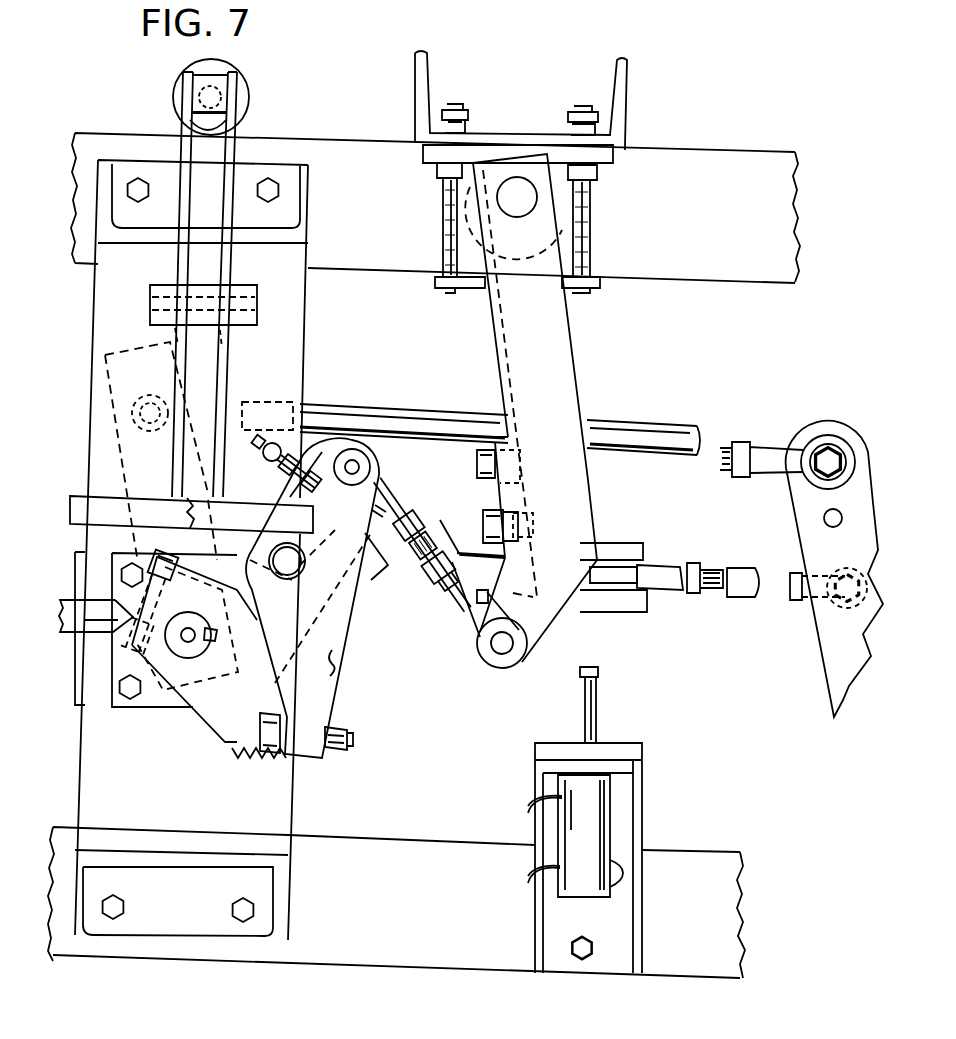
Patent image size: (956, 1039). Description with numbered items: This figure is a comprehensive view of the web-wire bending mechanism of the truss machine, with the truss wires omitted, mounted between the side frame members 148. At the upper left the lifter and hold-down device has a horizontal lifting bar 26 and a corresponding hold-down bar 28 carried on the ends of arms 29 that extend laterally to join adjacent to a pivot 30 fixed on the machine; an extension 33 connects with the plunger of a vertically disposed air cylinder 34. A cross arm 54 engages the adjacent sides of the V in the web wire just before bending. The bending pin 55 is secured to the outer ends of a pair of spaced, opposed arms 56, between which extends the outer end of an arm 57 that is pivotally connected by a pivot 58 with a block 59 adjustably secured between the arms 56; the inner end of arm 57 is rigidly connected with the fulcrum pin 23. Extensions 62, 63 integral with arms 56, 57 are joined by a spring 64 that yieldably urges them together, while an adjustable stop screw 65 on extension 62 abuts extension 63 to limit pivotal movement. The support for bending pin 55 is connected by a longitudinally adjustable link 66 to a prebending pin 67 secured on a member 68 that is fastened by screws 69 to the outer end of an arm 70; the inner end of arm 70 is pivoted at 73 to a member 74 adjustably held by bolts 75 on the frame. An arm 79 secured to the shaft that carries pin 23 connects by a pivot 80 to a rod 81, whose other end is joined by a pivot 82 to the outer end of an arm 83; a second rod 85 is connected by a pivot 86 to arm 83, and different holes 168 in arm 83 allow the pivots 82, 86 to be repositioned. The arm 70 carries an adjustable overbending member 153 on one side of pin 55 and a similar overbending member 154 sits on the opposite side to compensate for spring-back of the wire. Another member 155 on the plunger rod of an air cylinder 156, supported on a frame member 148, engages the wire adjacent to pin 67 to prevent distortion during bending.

The fulcrum pin 23 is at (194, 640).
The lifting bar 26 is at (148, 512).
The hold-down bar 28 is at (258, 510).
The arms 29 is at (223, 342).
The pivot 30 is at (248, 292).
The extension 33 is at (232, 137).
The air cylinder 34 is at (240, 70).
The cross arm 54 is at (98, 635).
The bending pin 55 is at (360, 466).
The arms 56 is at (330, 664).
The arm 57 is at (365, 575).
The pivot 58 is at (302, 572).
The block 59 is at (247, 548).
The extension 62 is at (313, 760).
The extension 63 is at (235, 732).
The spring 64 is at (268, 768).
The stop screw 65 is at (353, 738).
The link 66 is at (438, 583).
The prebending pin 67 is at (503, 648).
The member 68 is at (588, 513).
The screws 69 is at (487, 513).
The arm 70 is at (567, 357).
The pivot 73 is at (537, 190).
The member 74 is at (562, 205).
The bolts 75 is at (590, 240).
The arm 79 is at (123, 345).
The pivot 80 is at (145, 392).
The rod 81 is at (438, 417).
The pivot 82 is at (827, 453).
The arm 83 is at (797, 495).
The rod 85 is at (747, 597).
The pivot 86 is at (803, 630).
The side frame members 148 is at (728, 248).
The overbending member 153 is at (440, 533).
The overbending member 154 is at (308, 465).
The member 155 is at (600, 673).
The air cylinder 156 is at (610, 810).
The holes 168 is at (824, 521).